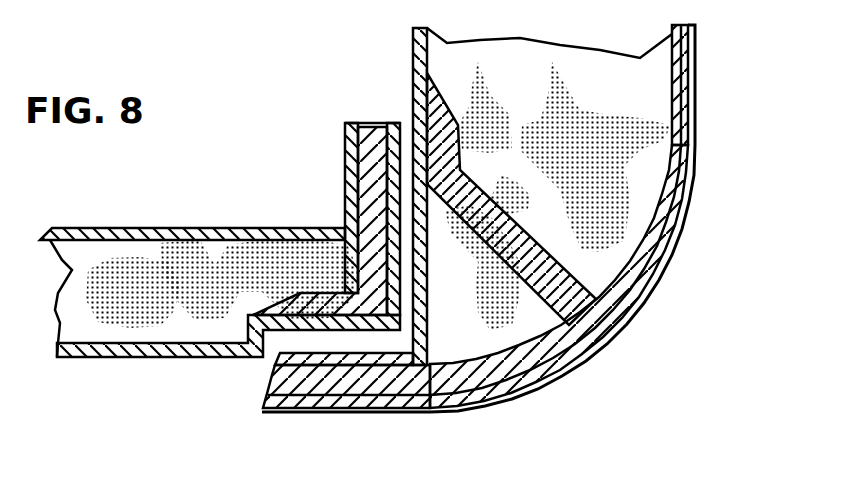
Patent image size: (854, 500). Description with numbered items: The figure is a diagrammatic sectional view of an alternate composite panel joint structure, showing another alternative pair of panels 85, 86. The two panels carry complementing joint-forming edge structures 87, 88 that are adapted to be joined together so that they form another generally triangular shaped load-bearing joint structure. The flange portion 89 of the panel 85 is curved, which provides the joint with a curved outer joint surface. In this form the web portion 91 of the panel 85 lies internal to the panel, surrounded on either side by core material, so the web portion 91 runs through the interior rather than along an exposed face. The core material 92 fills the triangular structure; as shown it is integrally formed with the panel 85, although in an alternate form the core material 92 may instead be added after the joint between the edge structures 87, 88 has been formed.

The panel 85 is at (719, 125).
The panel 86 is at (150, 372).
The joint-forming edge structure 87 is at (400, 417).
The joint-forming edge structure 88 is at (322, 205).
The flange portion 89 is at (488, 385).
The web portion 91 is at (503, 222).
The core material 92 is at (470, 288).